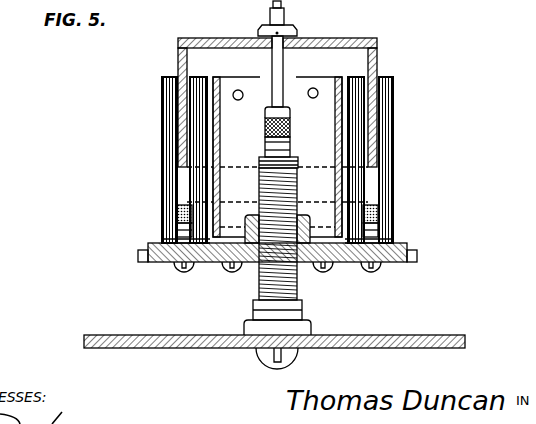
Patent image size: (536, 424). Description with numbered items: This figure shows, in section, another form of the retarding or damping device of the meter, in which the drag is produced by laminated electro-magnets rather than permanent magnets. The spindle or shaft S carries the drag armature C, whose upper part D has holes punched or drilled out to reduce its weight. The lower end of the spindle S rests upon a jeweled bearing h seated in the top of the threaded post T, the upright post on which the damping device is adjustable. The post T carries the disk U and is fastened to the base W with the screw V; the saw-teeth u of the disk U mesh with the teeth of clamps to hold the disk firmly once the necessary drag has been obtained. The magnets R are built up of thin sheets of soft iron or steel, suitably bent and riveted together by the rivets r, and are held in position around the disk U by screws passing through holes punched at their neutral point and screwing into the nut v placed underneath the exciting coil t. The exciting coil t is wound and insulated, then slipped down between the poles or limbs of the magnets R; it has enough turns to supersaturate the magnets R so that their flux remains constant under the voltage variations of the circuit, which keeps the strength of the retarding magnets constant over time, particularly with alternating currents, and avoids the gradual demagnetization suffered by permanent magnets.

The upper part of the drag armature D is at (317, 41).
The drag armature C is at (378, 62).
The spindle S is at (279, 67).
The jeweled bearing h is at (266, 117).
The threaded post T is at (262, 285).
The disk U is at (346, 263).
The saw-teeth of the disk u is at (417, 255).
The base W is at (396, 341).
The screw V is at (262, 358).
The rivets r is at (165, 94).
The magnets R is at (172, 144).
The exciting coil t is at (179, 213).
The nut v is at (179, 235).